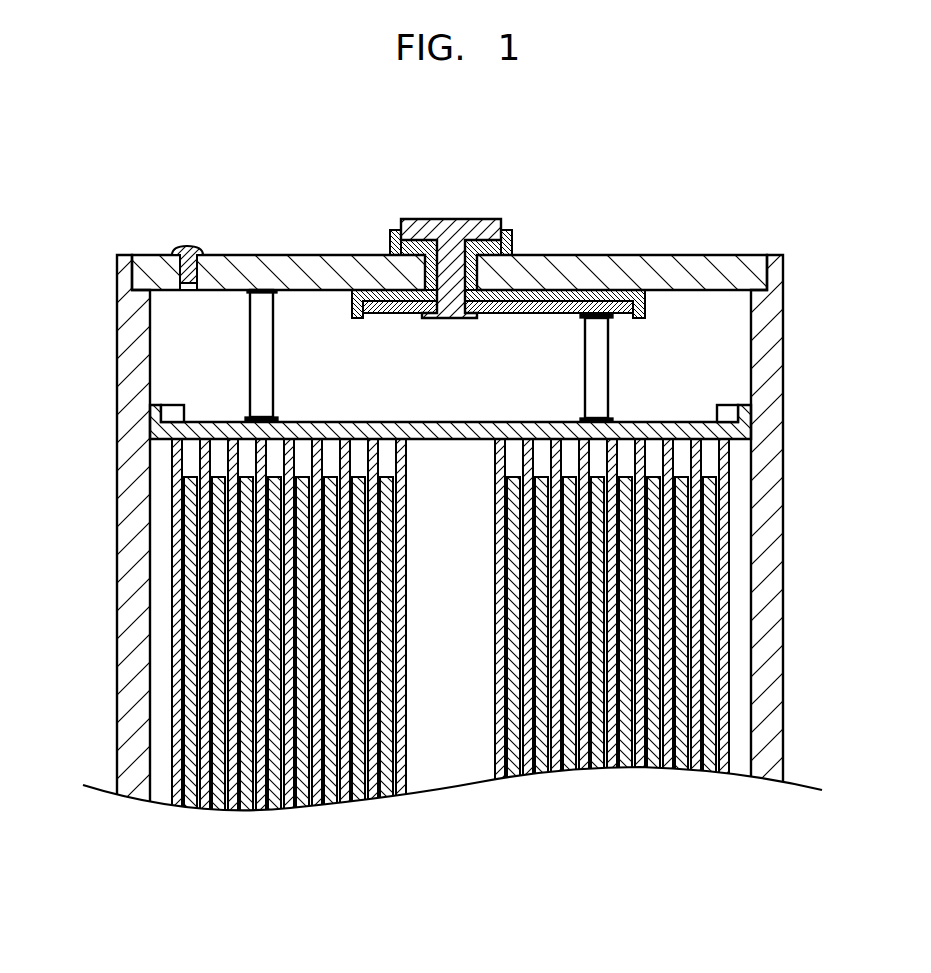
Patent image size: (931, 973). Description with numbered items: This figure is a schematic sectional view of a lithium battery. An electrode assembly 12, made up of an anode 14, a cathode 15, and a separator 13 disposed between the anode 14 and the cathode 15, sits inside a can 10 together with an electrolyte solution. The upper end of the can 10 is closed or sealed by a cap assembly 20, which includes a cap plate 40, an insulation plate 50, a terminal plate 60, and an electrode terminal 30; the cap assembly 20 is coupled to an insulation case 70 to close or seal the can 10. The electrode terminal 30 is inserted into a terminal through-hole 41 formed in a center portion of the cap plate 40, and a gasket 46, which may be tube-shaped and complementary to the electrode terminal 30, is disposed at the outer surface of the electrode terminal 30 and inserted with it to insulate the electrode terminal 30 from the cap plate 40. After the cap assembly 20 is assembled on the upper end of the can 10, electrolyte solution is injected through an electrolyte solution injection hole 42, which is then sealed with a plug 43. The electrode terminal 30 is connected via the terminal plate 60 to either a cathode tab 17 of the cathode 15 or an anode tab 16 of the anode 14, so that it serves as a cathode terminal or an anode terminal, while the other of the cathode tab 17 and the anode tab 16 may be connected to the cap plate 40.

The can 10 is at (772, 652).
The electrode assembly 12 is at (509, 658).
The separator 13 is at (707, 762).
The anode 14 is at (720, 768).
The cathode 15 is at (697, 767).
The anode tab 16 is at (257, 342).
The cathode tab 17 is at (603, 377).
The cap assembly 20 is at (467, 243).
The electrode terminal 30 is at (451, 226).
The cap plate 40 is at (695, 253).
The terminal through-hole 41 is at (422, 278).
The electrolyte solution injection hole 42 is at (178, 277).
The plug 43 is at (188, 245).
The gasket 46 is at (513, 230).
The insulation plate 50 is at (645, 318).
The terminal plate 60 is at (525, 313).
The insulation case 70 is at (217, 430).